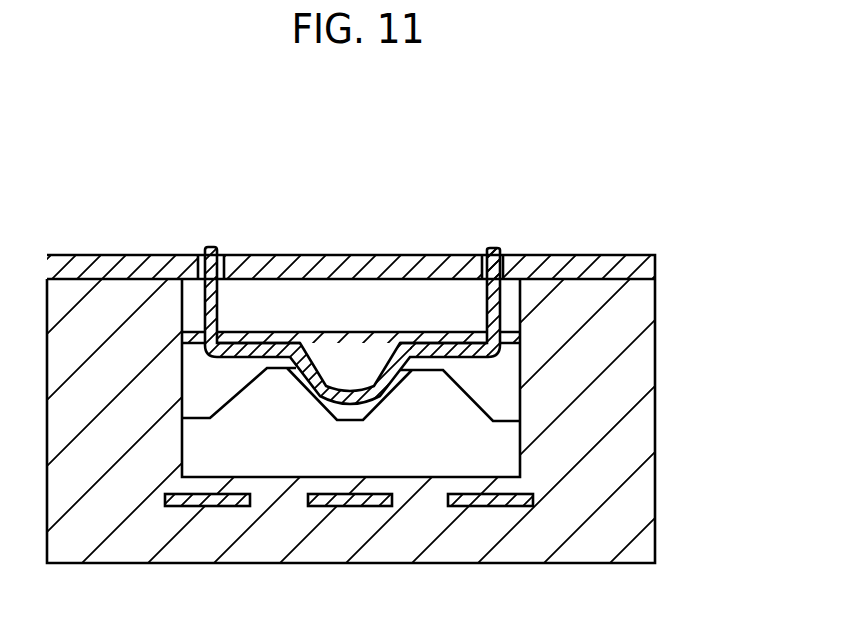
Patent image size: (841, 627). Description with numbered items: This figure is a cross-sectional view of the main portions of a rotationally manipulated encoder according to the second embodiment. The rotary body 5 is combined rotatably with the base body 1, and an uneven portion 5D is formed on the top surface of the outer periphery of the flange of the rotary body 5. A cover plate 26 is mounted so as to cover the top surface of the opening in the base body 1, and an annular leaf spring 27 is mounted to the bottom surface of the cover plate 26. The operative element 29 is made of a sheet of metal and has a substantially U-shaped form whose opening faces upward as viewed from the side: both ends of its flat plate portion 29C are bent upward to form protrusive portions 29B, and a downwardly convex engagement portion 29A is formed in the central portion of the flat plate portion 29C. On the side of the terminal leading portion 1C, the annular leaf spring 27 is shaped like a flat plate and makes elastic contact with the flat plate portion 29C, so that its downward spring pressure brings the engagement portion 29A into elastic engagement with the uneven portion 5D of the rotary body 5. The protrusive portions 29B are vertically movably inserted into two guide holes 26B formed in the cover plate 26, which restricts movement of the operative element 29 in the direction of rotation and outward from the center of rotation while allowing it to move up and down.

The terminal leading portion 1C is at (420, 313).
The base body 1 is at (628, 500).
The cover plate 26 is at (640, 258).
The guide holes 26B is at (500, 257).
The annular leaf spring 27 is at (263, 337).
The operative element 29 is at (420, 313).
The downwardly convex engagement portion 29A is at (360, 392).
The protrusive portions 29B is at (268, 158).
The flat plate portion 29C is at (438, 342).
The uneven portion 5D is at (489, 380).
The rotary body 5 is at (443, 403).